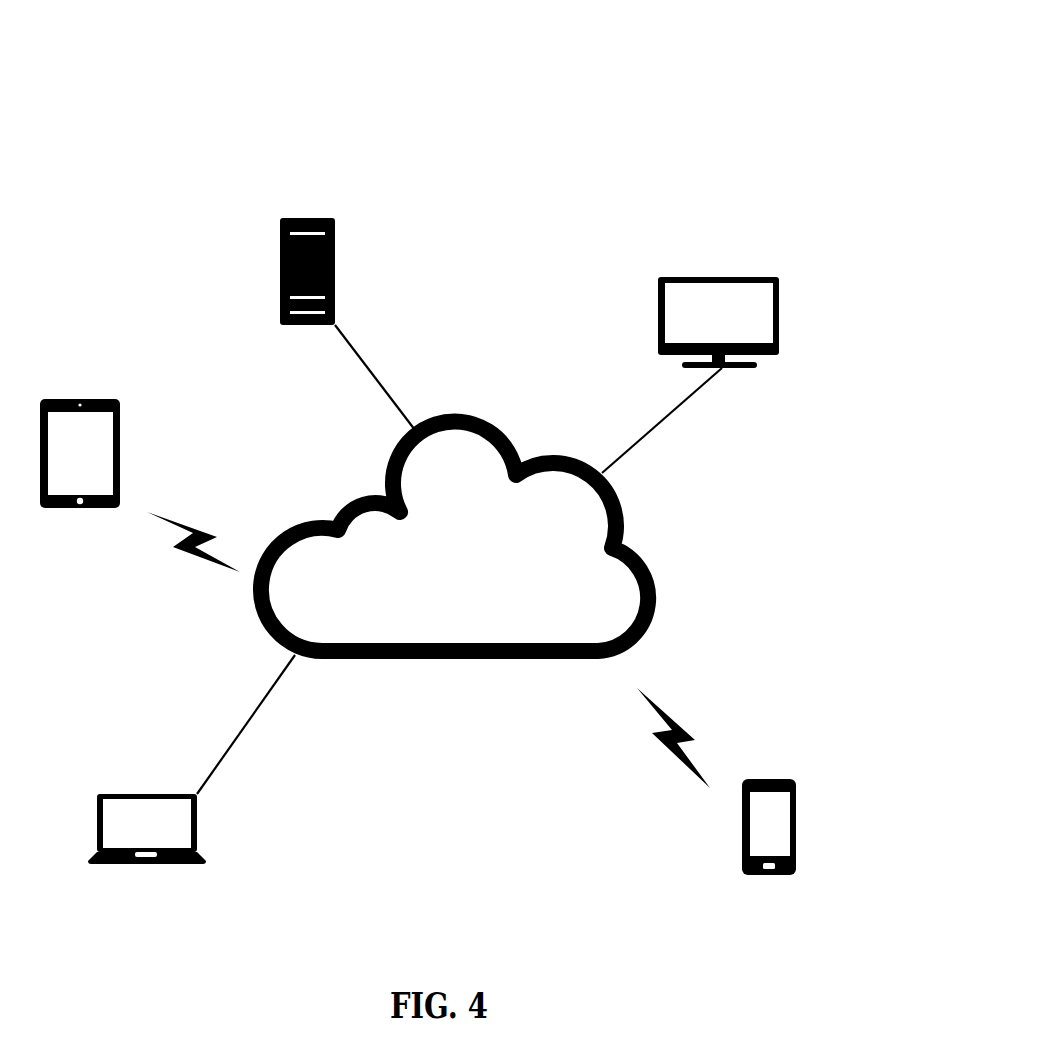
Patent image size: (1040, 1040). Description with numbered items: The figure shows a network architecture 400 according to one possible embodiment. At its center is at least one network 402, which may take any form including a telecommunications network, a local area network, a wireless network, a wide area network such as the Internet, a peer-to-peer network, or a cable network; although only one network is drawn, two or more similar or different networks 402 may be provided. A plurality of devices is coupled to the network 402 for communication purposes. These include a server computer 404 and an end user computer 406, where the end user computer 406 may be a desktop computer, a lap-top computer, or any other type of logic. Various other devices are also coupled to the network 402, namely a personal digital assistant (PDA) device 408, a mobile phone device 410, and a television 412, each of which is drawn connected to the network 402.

The network architecture 400 is at (86, 99).
The network 402 is at (466, 660).
The server computer 404 is at (308, 218).
The end user computer 406 is at (142, 794).
The personal digital assistant (PDA) device 408 is at (83, 399).
The mobile phone device 410 is at (762, 779).
The television 412 is at (722, 277).